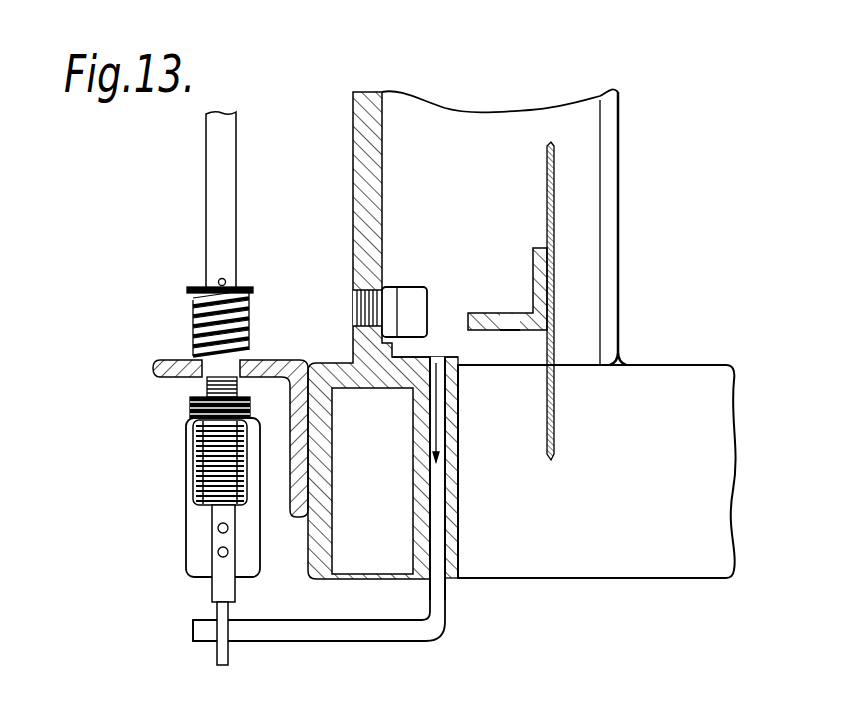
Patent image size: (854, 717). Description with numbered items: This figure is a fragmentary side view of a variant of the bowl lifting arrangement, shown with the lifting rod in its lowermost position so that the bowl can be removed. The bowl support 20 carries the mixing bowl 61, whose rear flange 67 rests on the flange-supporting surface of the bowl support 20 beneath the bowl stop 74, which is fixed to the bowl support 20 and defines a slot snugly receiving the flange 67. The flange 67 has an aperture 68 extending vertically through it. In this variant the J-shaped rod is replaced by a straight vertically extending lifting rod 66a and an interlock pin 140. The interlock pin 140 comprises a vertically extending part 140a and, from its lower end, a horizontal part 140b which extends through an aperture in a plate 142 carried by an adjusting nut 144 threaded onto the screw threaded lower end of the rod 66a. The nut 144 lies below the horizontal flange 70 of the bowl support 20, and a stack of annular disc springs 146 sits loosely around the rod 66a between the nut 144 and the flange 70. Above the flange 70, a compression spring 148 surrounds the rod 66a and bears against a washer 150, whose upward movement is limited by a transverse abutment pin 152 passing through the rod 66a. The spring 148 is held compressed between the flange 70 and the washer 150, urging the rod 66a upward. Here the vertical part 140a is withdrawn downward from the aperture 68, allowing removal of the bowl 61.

The bowl support 20 is at (676, 398).
The mixing bowl 61 is at (553, 203).
The lifting rod 66a is at (222, 137).
The flange 67 is at (488, 313).
The aperture 68 is at (511, 333).
The horizontal flange 70 is at (153, 364).
The bowl stop 74 is at (403, 300).
The interlock pin 140 is at (440, 598).
The vertically extending part 140a is at (436, 528).
The horizontal part 140b is at (327, 632).
The plate 142 is at (217, 650).
The adjusting nut 144 is at (187, 503).
The stack of annular disc springs 146 is at (194, 399).
The compression spring 148 is at (251, 315).
The washer 150 is at (250, 287).
The abutment pin 152 is at (218, 281).